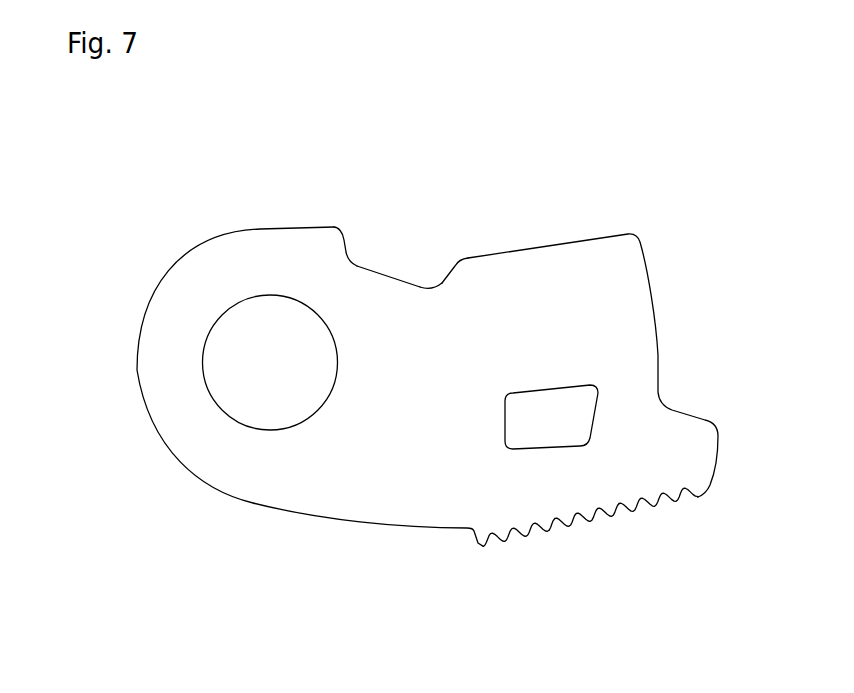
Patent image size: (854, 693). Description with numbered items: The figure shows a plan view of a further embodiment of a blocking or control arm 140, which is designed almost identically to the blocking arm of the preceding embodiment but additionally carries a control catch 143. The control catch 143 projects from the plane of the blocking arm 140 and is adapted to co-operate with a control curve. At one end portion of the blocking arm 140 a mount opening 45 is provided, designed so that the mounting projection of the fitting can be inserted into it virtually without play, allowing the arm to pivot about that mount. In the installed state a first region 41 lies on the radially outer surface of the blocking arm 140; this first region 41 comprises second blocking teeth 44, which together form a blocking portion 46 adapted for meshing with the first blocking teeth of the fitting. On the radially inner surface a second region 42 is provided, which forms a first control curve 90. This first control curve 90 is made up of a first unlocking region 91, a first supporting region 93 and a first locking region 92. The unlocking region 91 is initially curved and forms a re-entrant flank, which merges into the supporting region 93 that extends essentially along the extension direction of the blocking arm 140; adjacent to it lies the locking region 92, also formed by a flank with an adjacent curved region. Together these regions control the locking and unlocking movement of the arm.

The blocking arm 140 is at (152, 215).
The mount opening 45 is at (257, 372).
The first control curve 90 is at (380, 248).
The first unlocking region 91 is at (330, 216).
The second region 42 is at (394, 295).
The first supporting region 93 is at (409, 257).
The first locking region 92 is at (454, 250).
The control catch 143 is at (493, 420).
The first region 41 is at (556, 512).
The second blocking teeth 44 is at (523, 533).
The blocking portion 46 is at (605, 528).